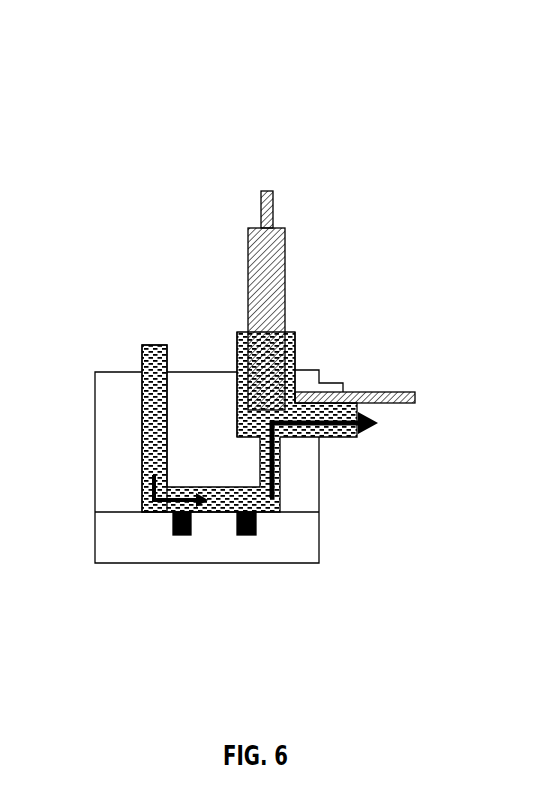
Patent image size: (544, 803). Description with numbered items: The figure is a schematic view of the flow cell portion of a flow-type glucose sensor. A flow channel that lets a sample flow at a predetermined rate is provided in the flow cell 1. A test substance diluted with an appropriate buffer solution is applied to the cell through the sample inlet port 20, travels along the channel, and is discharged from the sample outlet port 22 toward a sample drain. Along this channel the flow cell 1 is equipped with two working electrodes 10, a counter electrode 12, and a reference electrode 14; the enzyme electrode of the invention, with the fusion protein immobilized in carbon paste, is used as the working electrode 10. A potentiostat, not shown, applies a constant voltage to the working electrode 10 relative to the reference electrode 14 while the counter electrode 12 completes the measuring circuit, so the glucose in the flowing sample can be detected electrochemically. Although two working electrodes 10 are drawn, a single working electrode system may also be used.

The flow cell 1 is at (118, 122).
The working electrode 10 is at (172, 551).
The counter electrode 12 is at (390, 375).
The reference electrode 14 is at (279, 171).
The sample inlet port 20 is at (152, 330).
The sample outlet port 22 is at (358, 457).